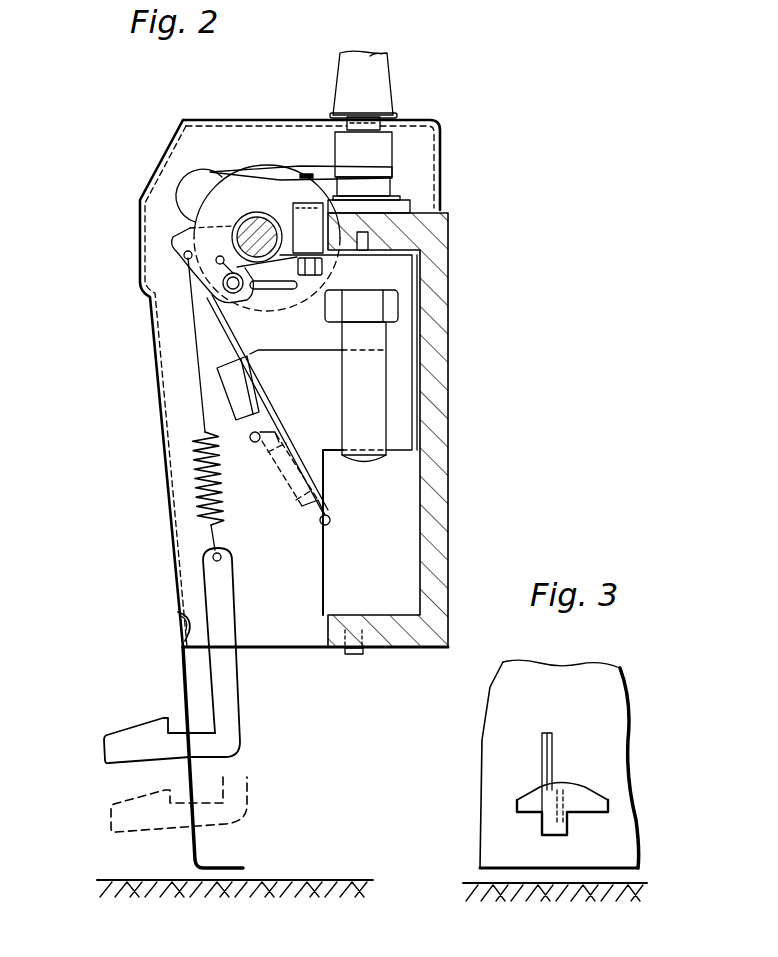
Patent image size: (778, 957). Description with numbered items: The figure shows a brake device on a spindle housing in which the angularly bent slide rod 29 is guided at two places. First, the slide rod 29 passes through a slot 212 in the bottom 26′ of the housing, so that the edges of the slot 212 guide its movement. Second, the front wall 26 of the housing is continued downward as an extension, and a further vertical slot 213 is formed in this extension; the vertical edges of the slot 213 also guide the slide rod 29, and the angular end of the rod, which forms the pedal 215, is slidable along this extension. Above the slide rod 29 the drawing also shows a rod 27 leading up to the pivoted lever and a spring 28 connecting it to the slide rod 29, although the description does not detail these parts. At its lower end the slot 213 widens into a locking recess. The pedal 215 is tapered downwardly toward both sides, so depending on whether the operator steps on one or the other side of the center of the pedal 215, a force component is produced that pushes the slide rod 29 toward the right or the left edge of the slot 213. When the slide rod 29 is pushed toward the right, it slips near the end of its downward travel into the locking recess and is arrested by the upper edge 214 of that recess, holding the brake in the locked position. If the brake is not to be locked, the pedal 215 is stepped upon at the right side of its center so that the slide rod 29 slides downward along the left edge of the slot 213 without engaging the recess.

In FIG. 2, the front wall 26 is at (160, 396).
In FIG. 2, the bottom of the housing 26′ is at (282, 648).
In FIG. 2, the pull rod 27 is at (199, 407).
In FIG. 2, the spring 28 is at (202, 485).
In FIG. 2, the slide rod 29 is at (222, 690).
In FIG. 2, the slot 212 is at (192, 652).
In FIG. 3, the slot 213 is at (548, 755).
In FIG. 3, the upper edge 214 is at (557, 800).
In FIG. 2, the pedal 215 is at (127, 740).
In FIG. 3, the pedal 215 is at (523, 800).